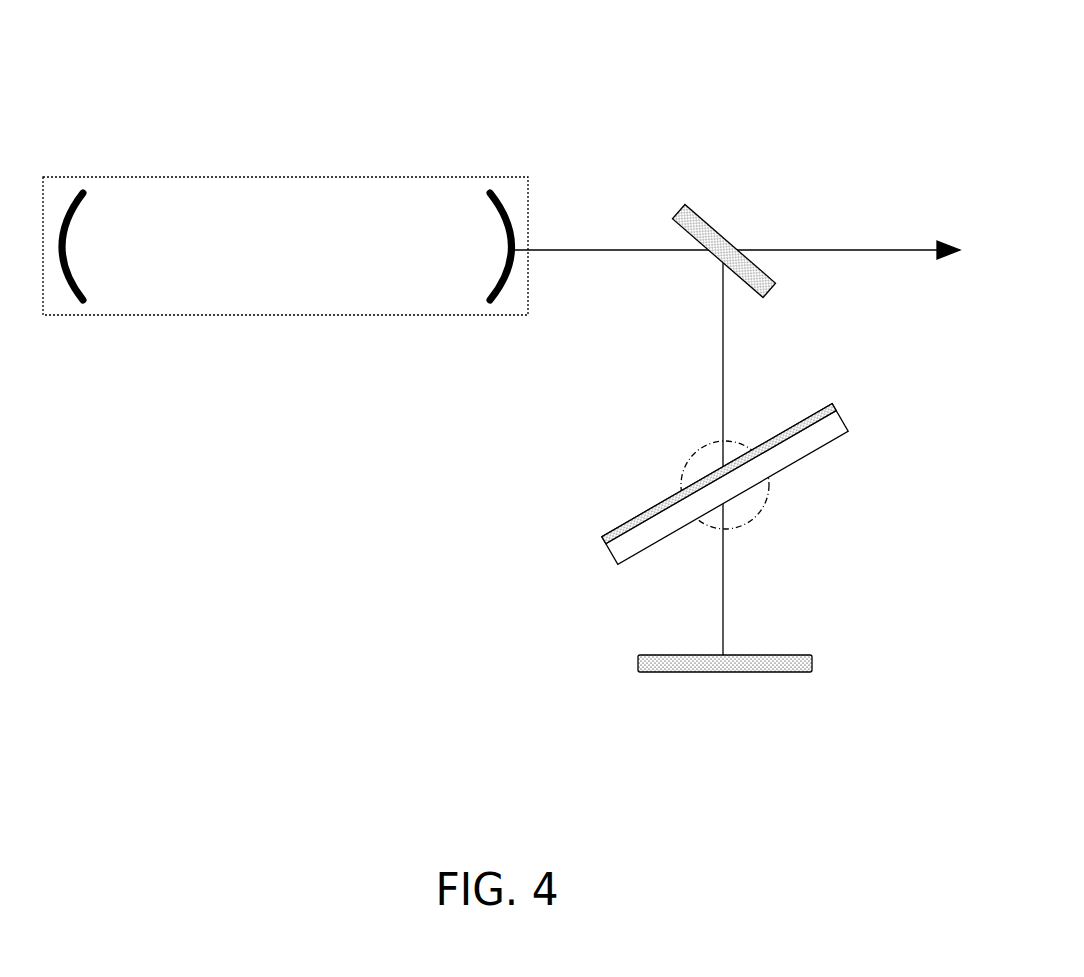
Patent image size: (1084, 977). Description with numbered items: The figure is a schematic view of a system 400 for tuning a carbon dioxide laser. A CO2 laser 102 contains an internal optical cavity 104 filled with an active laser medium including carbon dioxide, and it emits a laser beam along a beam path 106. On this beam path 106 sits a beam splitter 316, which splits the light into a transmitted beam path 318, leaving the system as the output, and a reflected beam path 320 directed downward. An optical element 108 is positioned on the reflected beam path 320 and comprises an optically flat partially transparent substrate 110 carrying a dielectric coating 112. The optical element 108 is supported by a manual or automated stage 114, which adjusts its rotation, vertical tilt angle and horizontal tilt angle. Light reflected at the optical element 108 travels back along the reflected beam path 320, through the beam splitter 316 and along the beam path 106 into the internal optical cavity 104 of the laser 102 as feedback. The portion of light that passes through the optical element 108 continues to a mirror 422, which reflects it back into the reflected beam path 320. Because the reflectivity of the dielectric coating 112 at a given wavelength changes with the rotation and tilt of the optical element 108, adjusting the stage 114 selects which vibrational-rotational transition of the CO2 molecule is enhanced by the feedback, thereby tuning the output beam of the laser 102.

The system 400 is at (492, 67).
The CO2 laser 102 is at (285, 315).
The internal optical cavity 104 is at (77, 210).
The beam path 106 is at (617, 233).
The beam splitter 316 is at (710, 222).
The transmitted beam path 318 is at (841, 237).
The reflected beam path 320 is at (687, 452).
The optical element 108 is at (758, 466).
The optically flat partially transparent substrate 110 is at (652, 508).
The dielectric coating 112 is at (815, 415).
The stage 114 is at (753, 520).
The mirror 422 is at (760, 660).